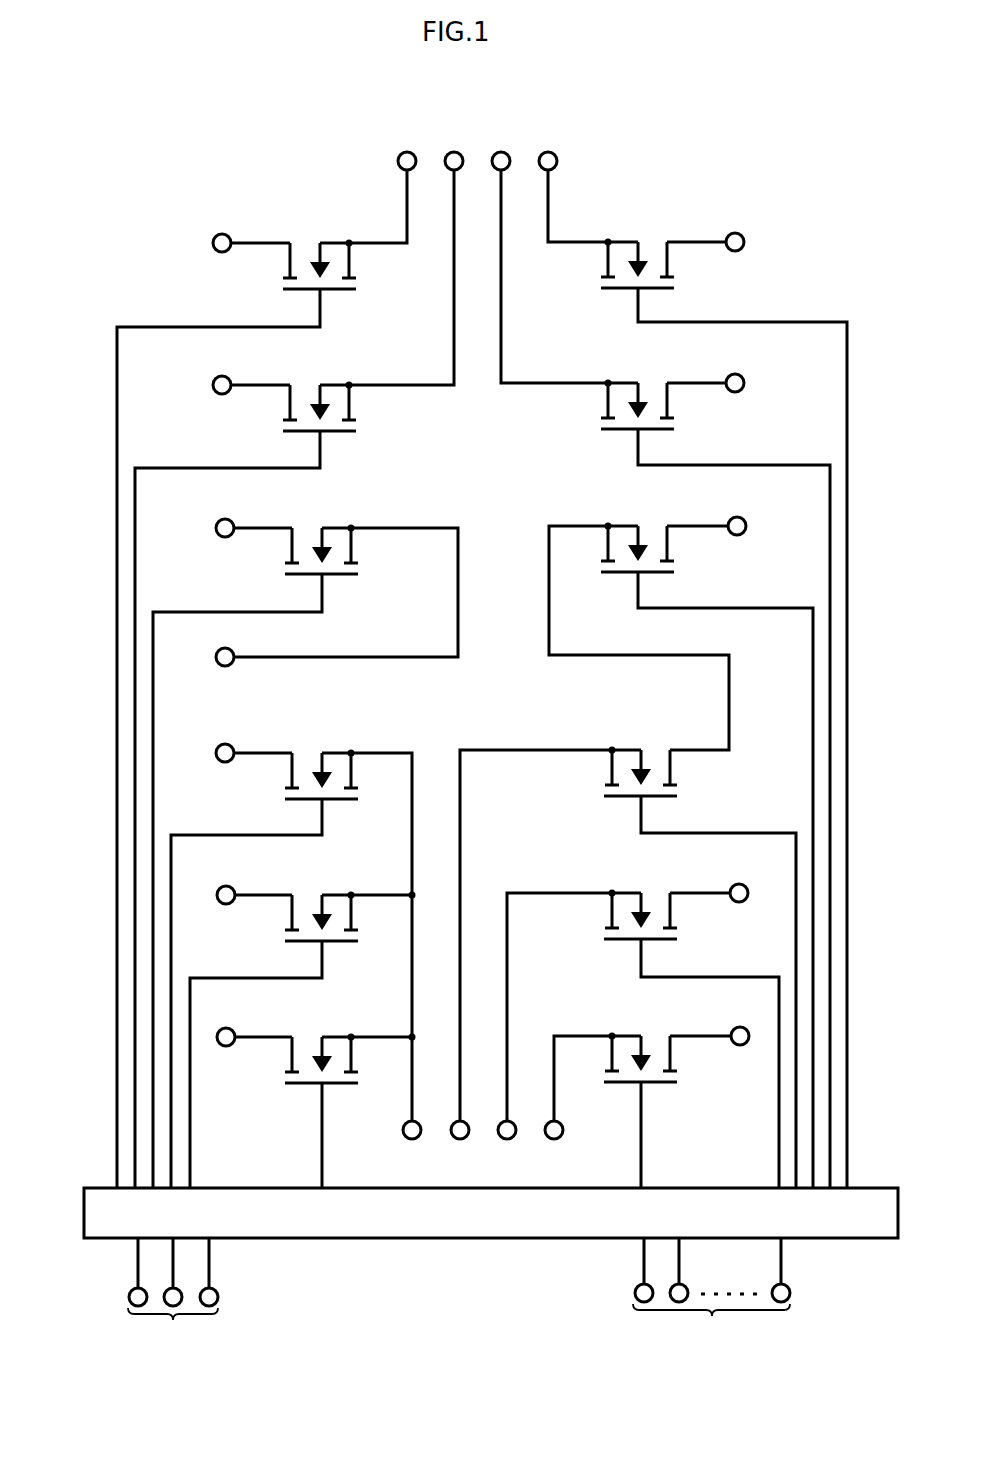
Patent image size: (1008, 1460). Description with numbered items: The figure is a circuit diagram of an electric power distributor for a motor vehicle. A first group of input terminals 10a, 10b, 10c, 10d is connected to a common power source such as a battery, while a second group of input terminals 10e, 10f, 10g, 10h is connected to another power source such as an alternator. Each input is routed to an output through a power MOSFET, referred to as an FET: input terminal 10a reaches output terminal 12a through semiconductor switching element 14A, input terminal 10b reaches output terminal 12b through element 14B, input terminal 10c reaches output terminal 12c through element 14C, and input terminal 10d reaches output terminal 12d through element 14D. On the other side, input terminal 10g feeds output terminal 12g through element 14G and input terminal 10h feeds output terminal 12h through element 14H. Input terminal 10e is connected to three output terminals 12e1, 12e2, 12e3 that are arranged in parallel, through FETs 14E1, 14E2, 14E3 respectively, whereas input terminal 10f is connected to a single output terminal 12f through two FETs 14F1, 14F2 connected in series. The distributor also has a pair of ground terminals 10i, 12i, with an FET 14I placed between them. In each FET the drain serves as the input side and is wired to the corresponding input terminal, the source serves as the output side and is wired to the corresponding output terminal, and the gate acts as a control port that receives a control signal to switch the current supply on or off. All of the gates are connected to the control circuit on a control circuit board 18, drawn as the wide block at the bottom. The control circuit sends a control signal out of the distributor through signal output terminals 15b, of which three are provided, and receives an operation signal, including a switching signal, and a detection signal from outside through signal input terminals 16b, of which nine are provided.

The input terminal 10a is at (401, 153).
The input terminal 10b is at (450, 153).
The input terminal 10c is at (507, 153).
The input terminal 10d is at (554, 153).
The input terminal 10e is at (411, 1140).
The input terminal 10f is at (459, 1140).
The input terminal 10g is at (509, 1140).
The input terminal 10h is at (556, 1140).
The ground terminal 10i is at (219, 520).
The output terminal 12a is at (217, 234).
The output terminal 12b is at (217, 376).
The output terminal 12c is at (740, 375).
The output terminal 12d is at (740, 234).
The output terminal 12e1 is at (227, 1028).
The output terminal 12e2 is at (220, 888).
The output terminal 12e3 is at (220, 746).
The output terminal 12f is at (743, 518).
The output terminal 12g is at (745, 885).
The output terminal 12h is at (752, 1010).
The ground terminal 12i is at (219, 650).
The semiconductor switching element 14A is at (365, 268).
The semiconductor switching element 14B is at (366, 410).
The semiconductor switching element 14C is at (590, 408).
The semiconductor switching element 14D is at (590, 267).
The FET 14E1 is at (307, 1102).
The FET 14E2 is at (336, 956).
The FET 14E3 is at (336, 814).
The FET 14F1 is at (624, 812).
The FET 14F2 is at (660, 522).
The semiconductor switching element 14G is at (624, 954).
The semiconductor switching element 14H is at (661, 1091).
The FET 14I is at (353, 585).
The signal output terminal 15b is at (173, 1296).
The signal input terminal 16b is at (711, 1293).
The control circuit board 18 is at (367, 1240).